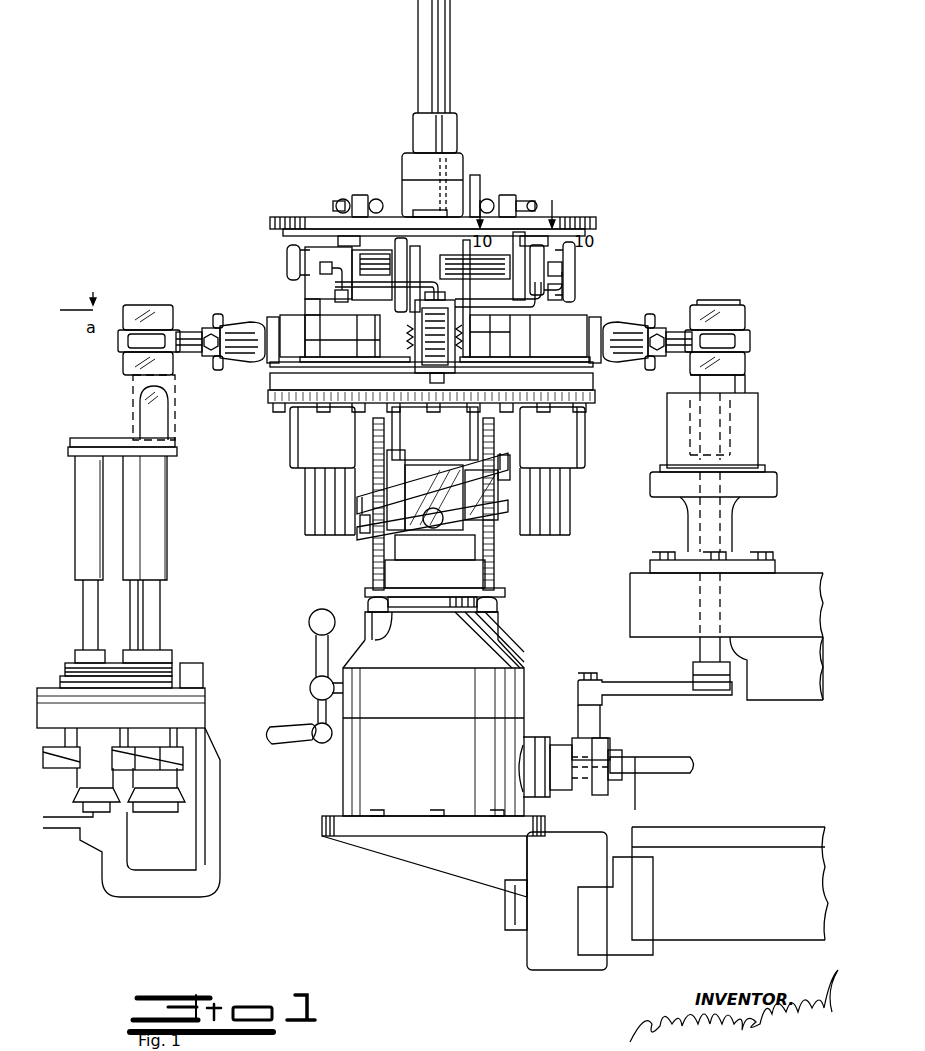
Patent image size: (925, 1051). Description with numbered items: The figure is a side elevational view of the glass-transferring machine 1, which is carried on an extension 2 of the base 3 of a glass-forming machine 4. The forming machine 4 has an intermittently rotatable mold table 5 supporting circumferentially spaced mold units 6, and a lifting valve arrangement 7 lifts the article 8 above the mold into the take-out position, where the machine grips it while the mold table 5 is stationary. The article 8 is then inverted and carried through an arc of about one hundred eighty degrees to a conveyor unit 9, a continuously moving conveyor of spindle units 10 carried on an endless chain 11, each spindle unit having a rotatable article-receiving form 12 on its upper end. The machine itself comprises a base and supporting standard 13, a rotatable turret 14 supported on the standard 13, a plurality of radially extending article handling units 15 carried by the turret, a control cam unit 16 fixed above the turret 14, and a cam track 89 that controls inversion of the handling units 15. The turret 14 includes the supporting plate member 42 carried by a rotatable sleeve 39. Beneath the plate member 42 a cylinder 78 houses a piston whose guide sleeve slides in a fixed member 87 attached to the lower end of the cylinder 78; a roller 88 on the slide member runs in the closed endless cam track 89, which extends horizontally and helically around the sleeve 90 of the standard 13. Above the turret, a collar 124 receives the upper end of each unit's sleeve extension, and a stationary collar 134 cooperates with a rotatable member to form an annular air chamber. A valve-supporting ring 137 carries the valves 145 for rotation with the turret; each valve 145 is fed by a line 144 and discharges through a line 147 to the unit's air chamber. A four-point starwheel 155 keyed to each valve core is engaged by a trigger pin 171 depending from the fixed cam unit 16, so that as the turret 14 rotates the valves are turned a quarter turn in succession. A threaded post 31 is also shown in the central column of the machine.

The glass-transferring machine 1 is at (300, 534).
The extension 2 is at (440, 864).
The base 3 is at (692, 927).
The glass-forming machine 4 is at (786, 688).
The mold table 5 is at (782, 578).
The mold units 6 is at (758, 434).
The lifting valve arrangement 7 is at (740, 528).
The article 8 is at (736, 320).
The conveyor unit 9 is at (165, 493).
The spindle units 10 is at (155, 598).
The endless chain 11 is at (183, 770).
The article-receiving form 12 is at (170, 395).
The base and supporting standard 13 is at (503, 645).
The rotatable turret 14 is at (602, 401).
The article handling units 15 is at (247, 315).
The control cam unit 16 is at (600, 213).
The threaded post 31 is at (372, 567).
The rotatable sleeve 39 is at (488, 328).
The supporting plate member 42 is at (557, 381).
The cylinder 78 is at (290, 433).
The fixed member 87 is at (305, 483).
The roller 88 is at (362, 534).
The cam track 89 is at (498, 503).
The sleeve 90 is at (393, 470).
The collar 124 is at (322, 268).
The collar 134 is at (456, 235).
The valve-supporting ring 137 is at (388, 247).
The line 144 is at (335, 285).
The valve 145 is at (302, 248).
The line 147 is at (300, 260).
The starwheel 155 is at (325, 255).
The trigger pin 171 is at (347, 244).